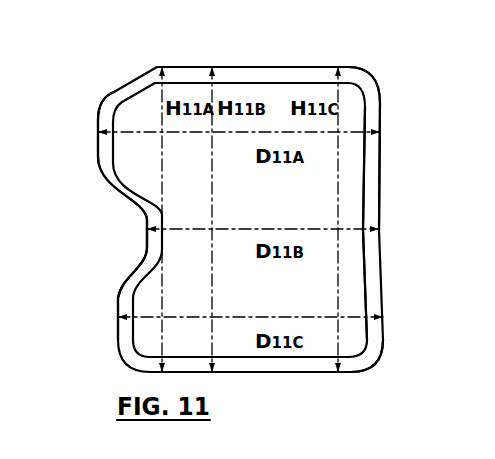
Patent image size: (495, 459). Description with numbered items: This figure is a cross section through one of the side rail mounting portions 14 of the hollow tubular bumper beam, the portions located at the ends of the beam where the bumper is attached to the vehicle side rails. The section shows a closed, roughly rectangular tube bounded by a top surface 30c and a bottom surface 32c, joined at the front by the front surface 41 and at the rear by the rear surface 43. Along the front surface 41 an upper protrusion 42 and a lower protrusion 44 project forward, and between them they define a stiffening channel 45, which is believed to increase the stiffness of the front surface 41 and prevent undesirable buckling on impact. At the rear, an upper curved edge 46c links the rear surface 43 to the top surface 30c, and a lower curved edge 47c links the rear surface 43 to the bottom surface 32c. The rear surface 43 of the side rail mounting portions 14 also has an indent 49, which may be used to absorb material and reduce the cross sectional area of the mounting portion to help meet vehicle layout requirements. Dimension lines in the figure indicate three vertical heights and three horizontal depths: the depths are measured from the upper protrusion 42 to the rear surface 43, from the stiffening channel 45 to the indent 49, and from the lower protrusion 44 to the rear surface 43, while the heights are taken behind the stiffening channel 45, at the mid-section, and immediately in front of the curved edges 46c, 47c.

The side rail mounting portion 14 is at (397, 192).
The top surface 30c is at (277, 66).
The bottom surface 32c is at (305, 373).
The front surface 41 is at (75, 234).
The upper protrusion 42 is at (97, 144).
The rear surface 43 is at (382, 138).
The lower protrusion 44 is at (117, 314).
The stiffening channel 45 is at (146, 229).
The upper curved edge 46c is at (373, 87).
The lower curved edge 47c is at (373, 355).
The indent 49 is at (374, 218).